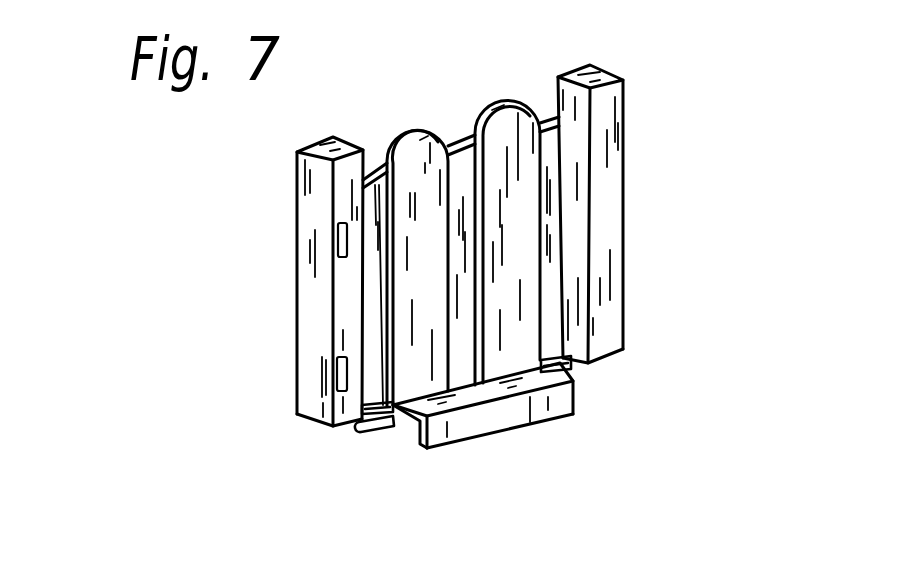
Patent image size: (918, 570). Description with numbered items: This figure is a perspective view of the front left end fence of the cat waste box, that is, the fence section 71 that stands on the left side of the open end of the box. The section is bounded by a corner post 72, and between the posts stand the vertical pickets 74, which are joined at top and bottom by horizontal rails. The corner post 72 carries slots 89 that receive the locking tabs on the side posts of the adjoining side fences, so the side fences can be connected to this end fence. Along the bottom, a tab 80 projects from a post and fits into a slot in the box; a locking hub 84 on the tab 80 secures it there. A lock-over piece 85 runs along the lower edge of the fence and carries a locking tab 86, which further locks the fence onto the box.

The fence section 71 is at (640, 52).
The corner post 72 is at (302, 165).
The picket 74 is at (408, 140).
The slot 89 is at (340, 246).
The tab 80 is at (386, 423).
The locking hub 84 is at (357, 427).
The lock-over piece 85 is at (548, 418).
The locking tab 86 is at (422, 440).